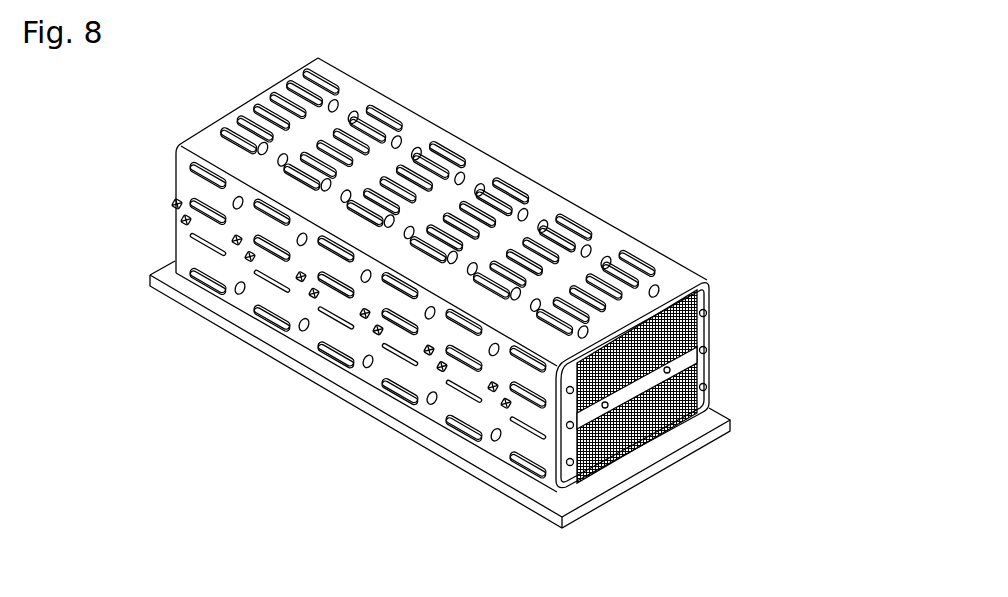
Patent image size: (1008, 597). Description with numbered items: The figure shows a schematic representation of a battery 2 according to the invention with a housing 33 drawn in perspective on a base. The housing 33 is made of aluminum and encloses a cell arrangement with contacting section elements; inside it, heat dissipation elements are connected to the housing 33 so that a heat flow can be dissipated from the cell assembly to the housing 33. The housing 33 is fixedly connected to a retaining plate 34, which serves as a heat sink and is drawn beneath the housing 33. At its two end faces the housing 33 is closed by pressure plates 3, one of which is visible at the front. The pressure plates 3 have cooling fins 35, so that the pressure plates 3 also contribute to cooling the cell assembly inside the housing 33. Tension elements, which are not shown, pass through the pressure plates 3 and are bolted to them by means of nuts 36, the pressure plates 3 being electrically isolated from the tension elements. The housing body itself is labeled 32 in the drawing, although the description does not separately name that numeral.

The battery 2 is at (299, 382).
The pressure plates 3 is at (712, 302).
The perforated housing body 32 is at (503, 157).
The housing 33 is at (538, 203).
The retaining plate 34 is at (631, 470).
The cooling fins 35 is at (678, 433).
The nuts 36 is at (707, 314).